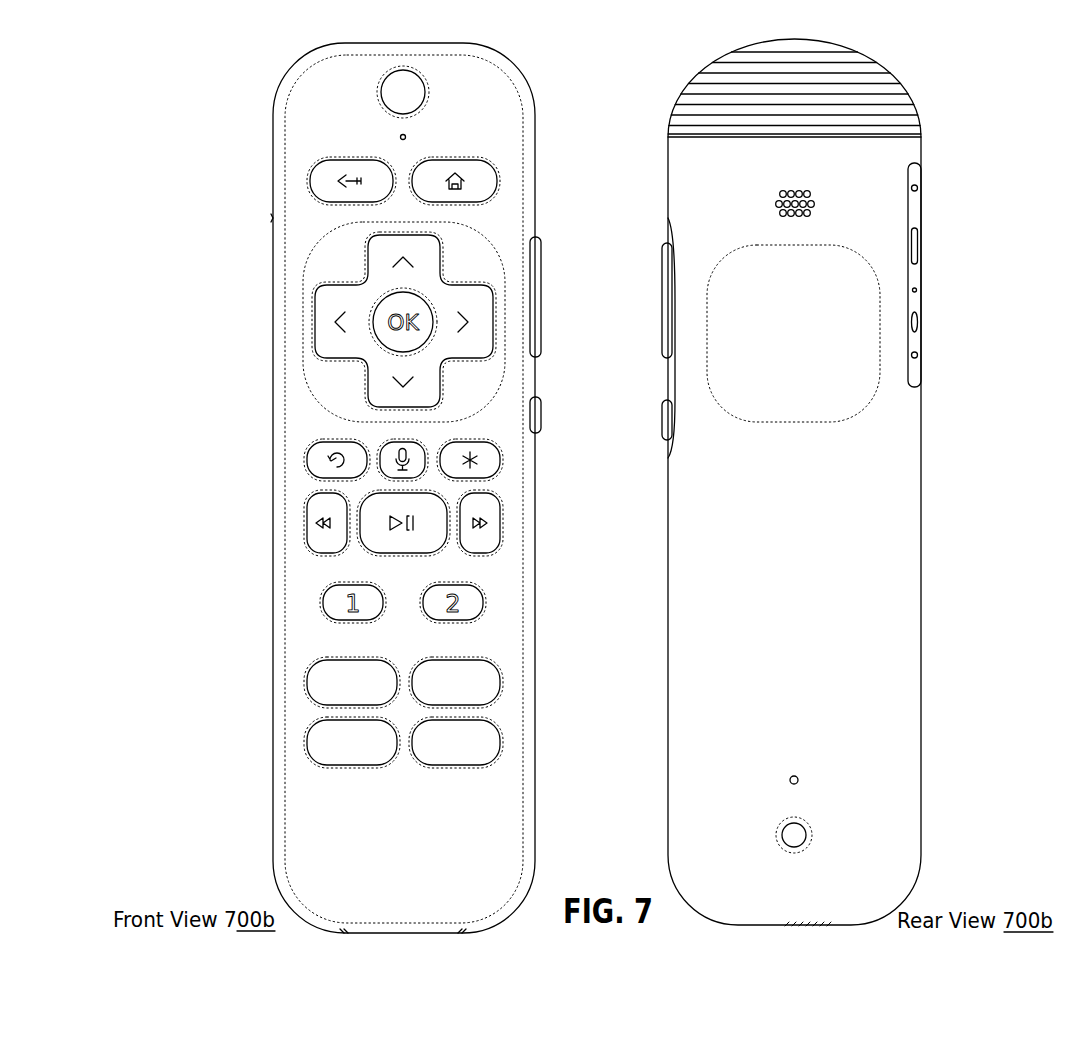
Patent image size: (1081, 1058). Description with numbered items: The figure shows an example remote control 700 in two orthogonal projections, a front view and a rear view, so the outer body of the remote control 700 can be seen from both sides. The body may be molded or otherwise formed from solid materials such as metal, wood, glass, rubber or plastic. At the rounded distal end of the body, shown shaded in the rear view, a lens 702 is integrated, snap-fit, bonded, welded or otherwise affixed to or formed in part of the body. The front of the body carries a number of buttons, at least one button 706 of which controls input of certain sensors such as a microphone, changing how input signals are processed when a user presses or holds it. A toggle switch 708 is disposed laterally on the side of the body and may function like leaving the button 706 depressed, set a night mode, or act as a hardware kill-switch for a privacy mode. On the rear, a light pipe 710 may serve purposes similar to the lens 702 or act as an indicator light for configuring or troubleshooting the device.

The remote control 700 is at (1058, 61).
The lens 702 is at (405, 45).
The button 706 is at (772, 204).
The toggle switch 708 is at (272, 218).
The light pipe 710 is at (798, 778).